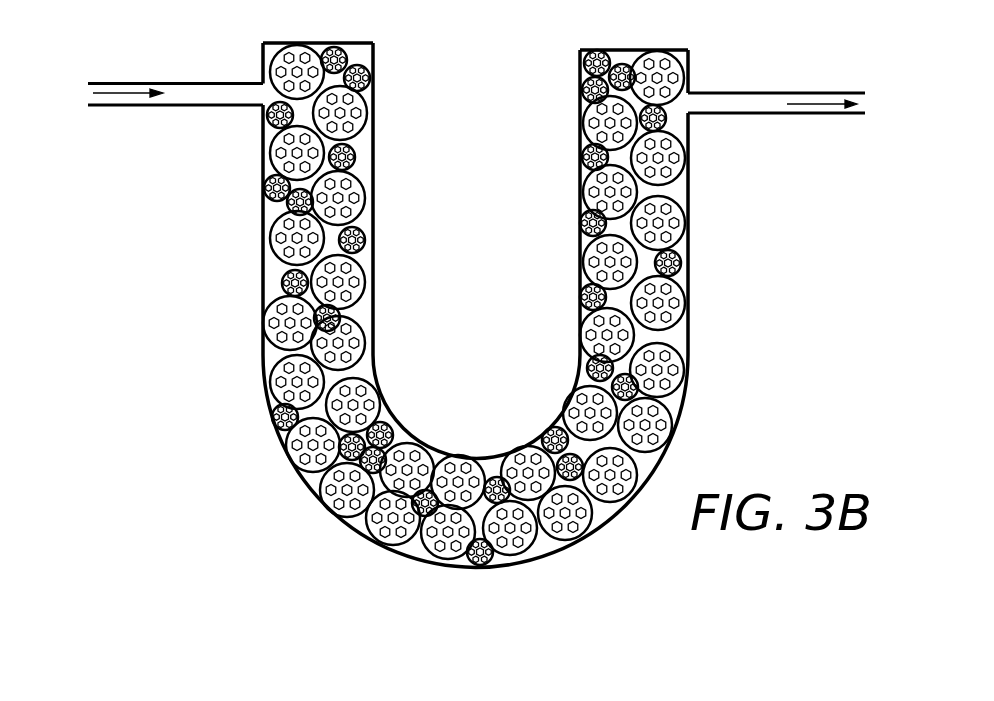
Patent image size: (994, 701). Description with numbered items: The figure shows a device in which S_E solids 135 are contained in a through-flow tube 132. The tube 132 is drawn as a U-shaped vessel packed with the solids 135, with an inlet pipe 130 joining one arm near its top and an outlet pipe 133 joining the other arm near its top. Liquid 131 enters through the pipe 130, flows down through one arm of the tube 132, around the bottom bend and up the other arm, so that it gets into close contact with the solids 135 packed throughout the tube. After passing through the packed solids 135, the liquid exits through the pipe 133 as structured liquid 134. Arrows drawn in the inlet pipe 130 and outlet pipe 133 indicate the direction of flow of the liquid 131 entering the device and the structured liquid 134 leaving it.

The pipe 130 is at (207, 82).
The liquid 131 is at (193, 95).
The tube 132 is at (373, 263).
The S_E solids 135 is at (680, 270).
The pipe 133 is at (772, 92).
The structured liquid 134 is at (725, 102).